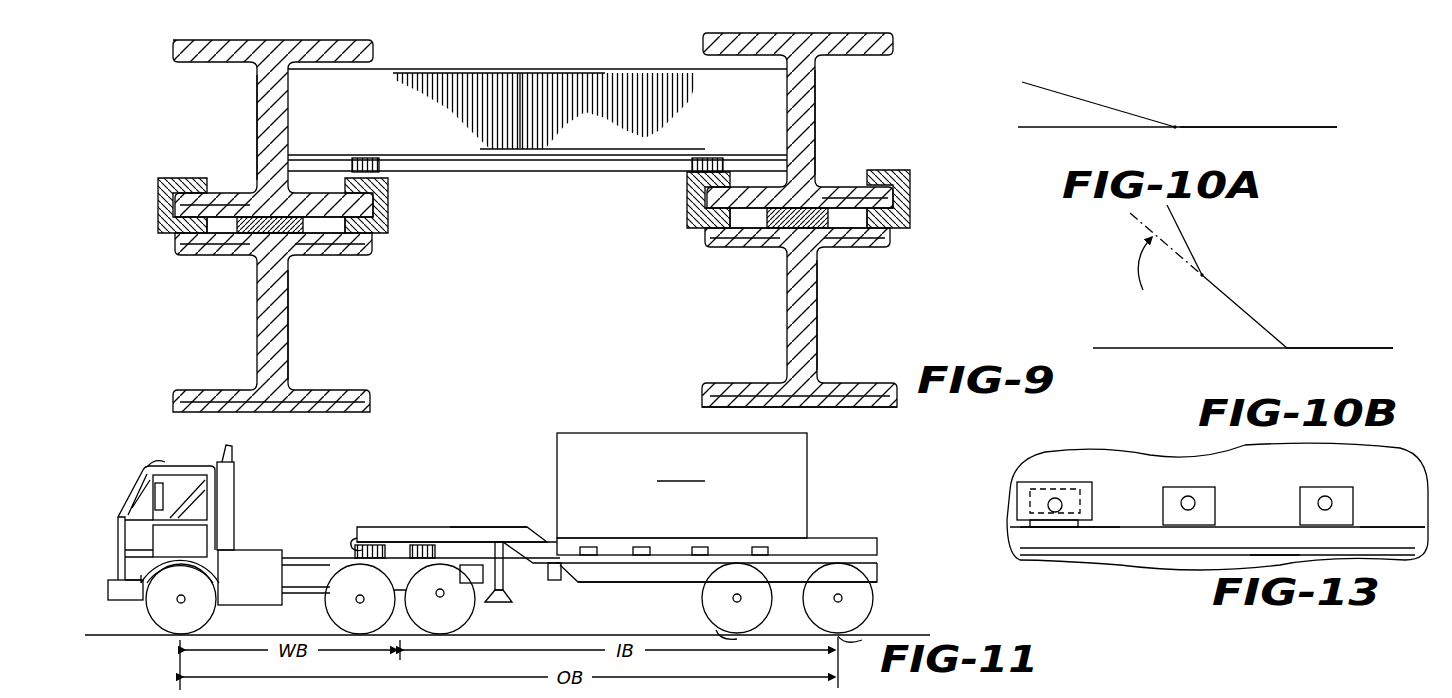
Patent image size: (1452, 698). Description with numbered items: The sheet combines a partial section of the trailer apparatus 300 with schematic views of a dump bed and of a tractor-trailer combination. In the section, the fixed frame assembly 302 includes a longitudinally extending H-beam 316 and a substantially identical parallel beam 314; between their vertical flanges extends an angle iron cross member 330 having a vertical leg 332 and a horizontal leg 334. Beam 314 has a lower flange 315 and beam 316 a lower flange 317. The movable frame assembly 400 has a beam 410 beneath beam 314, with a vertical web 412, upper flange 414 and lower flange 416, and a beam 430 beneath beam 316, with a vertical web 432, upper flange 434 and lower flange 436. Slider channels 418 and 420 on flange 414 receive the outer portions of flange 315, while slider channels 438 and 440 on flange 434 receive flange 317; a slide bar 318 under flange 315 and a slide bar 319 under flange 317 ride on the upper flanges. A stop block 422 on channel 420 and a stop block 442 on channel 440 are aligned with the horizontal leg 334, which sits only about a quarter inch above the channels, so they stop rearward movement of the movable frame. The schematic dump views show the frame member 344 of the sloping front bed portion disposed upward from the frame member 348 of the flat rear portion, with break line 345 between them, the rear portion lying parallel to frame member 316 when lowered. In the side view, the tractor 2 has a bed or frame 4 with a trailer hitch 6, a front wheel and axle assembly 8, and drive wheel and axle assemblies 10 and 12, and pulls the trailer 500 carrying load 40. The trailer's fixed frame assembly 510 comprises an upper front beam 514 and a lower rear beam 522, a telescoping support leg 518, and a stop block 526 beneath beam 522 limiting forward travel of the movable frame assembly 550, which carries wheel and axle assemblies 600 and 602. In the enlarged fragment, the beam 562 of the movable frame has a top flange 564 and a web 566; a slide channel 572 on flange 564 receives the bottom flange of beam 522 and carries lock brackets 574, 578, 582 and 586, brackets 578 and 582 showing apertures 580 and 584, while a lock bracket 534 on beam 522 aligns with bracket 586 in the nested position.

In FIG. 11, the tractor 2 is at (128, 494).
In FIG. 11, the bed or frame 4 is at (290, 557).
In FIG. 11, the trailer hitch 6 is at (356, 556).
In FIG. 11, the front wheel and axle assembly 8 is at (200, 614).
In FIG. 11, the drive wheel and axle assembly 10 is at (333, 636).
In FIG. 11, the drive wheel and axle assembly 12 is at (430, 625).
In FIG. 11, the load 40 is at (807, 495).
In FIG. 9, the trailer apparatus 300 is at (885, 107).
In FIG. 9, the fixed frame assembly 302 is at (183, 63).
In FIG. 9, the beam 314 is at (262, 88).
In FIG. 9, the lower flange 315 is at (237, 200).
In FIG. 9, the beam 316 is at (815, 85).
In FIG. 10A, the beam 316 is at (1065, 128).
In FIG. 10B, the beam 316 is at (1195, 350).
In FIG. 9, the lower flange 317 is at (828, 190).
In FIG. 9, the slide bar 318 is at (298, 256).
In FIG. 9, the slide bar 319 is at (815, 248).
In FIG. 9, the angle iron cross member 330 is at (452, 68).
In FIG. 9, the vertical leg 332 is at (540, 68).
In FIG. 9, the horizontal leg 334 is at (515, 172).
In FIG. 10A, the frame member 344 is at (1078, 93).
In FIG. 10B, the frame member 344 is at (1178, 218).
In FIG. 10A, the break line 345 is at (1180, 125).
In FIG. 10B, the break line 345 is at (1202, 280).
In FIG. 10A, the frame member 348 is at (1118, 133).
In FIG. 10B, the frame member 348 is at (1252, 313).
In FIG. 9, the movable frame assembly 400 is at (845, 378).
In FIG. 9, the beam 410 is at (258, 312).
In FIG. 9, the vertical web 412 is at (278, 335).
In FIG. 9, the upper flange 414 is at (243, 250).
In FIG. 9, the lower flange 416 is at (220, 398).
In FIG. 9, the slider channel 418 is at (160, 200).
In FIG. 9, the slider channel 420 is at (385, 222).
In FIG. 9, the stop block 422 is at (370, 157).
In FIG. 9, the beam 430 is at (787, 308).
In FIG. 9, the vertical web 432 is at (812, 332).
In FIG. 9, the upper flange 434 is at (740, 247).
In FIG. 9, the lower flange 436 is at (735, 390).
In FIG. 9, the slider channel 438 is at (910, 192).
In FIG. 9, the slider channel 440 is at (690, 204).
In FIG. 9, the stop block 442 is at (708, 157).
In FIG. 11, the trailer 500 is at (466, 512).
In FIG. 13, the trailer 500 is at (1130, 468).
In FIG. 11, the fixed frame assembly 510 is at (450, 524).
In FIG. 11, the upper front beam 514 is at (482, 537).
In FIG. 11, the support leg 518 is at (492, 603).
In FIG. 11, the lower rear beam 522 is at (551, 558).
In FIG. 13, the lower rear beam 522 is at (1150, 470).
In FIG. 11, the stop block 526 is at (555, 581).
In FIG. 13, the lock bracket 534 is at (1025, 487).
In FIG. 11, the movable frame assembly 550 is at (882, 577).
In FIG. 13, the movable frame assembly 550 is at (1100, 562).
In FIG. 11, the beam 562 is at (630, 576).
In FIG. 13, the beam 562 is at (1175, 566).
In FIG. 13, the top flange 564 is at (1375, 548).
In FIG. 13, the web 566 is at (1255, 558).
In FIG. 13, the slide channel 572 is at (1362, 533).
In FIG. 11, the lock bracket 574 is at (588, 546).
In FIG. 13, the lock bracket 574 is at (1068, 527).
In FIG. 11, the lock bracket 578 is at (641, 546).
In FIG. 13, the lock bracket 578 is at (1197, 490).
In FIG. 13, the aperture 580 is at (1196, 502).
In FIG. 11, the lock bracket 582 is at (700, 546).
In FIG. 13, the lock bracket 582 is at (1310, 490).
In FIG. 13, the aperture 584 is at (1318, 503).
In FIG. 11, the lock bracket 586 is at (760, 546).
In FIG. 11, the wheel and axle assembly 600 is at (714, 633).
In FIG. 11, the wheel and axle assembly 602 is at (866, 636).